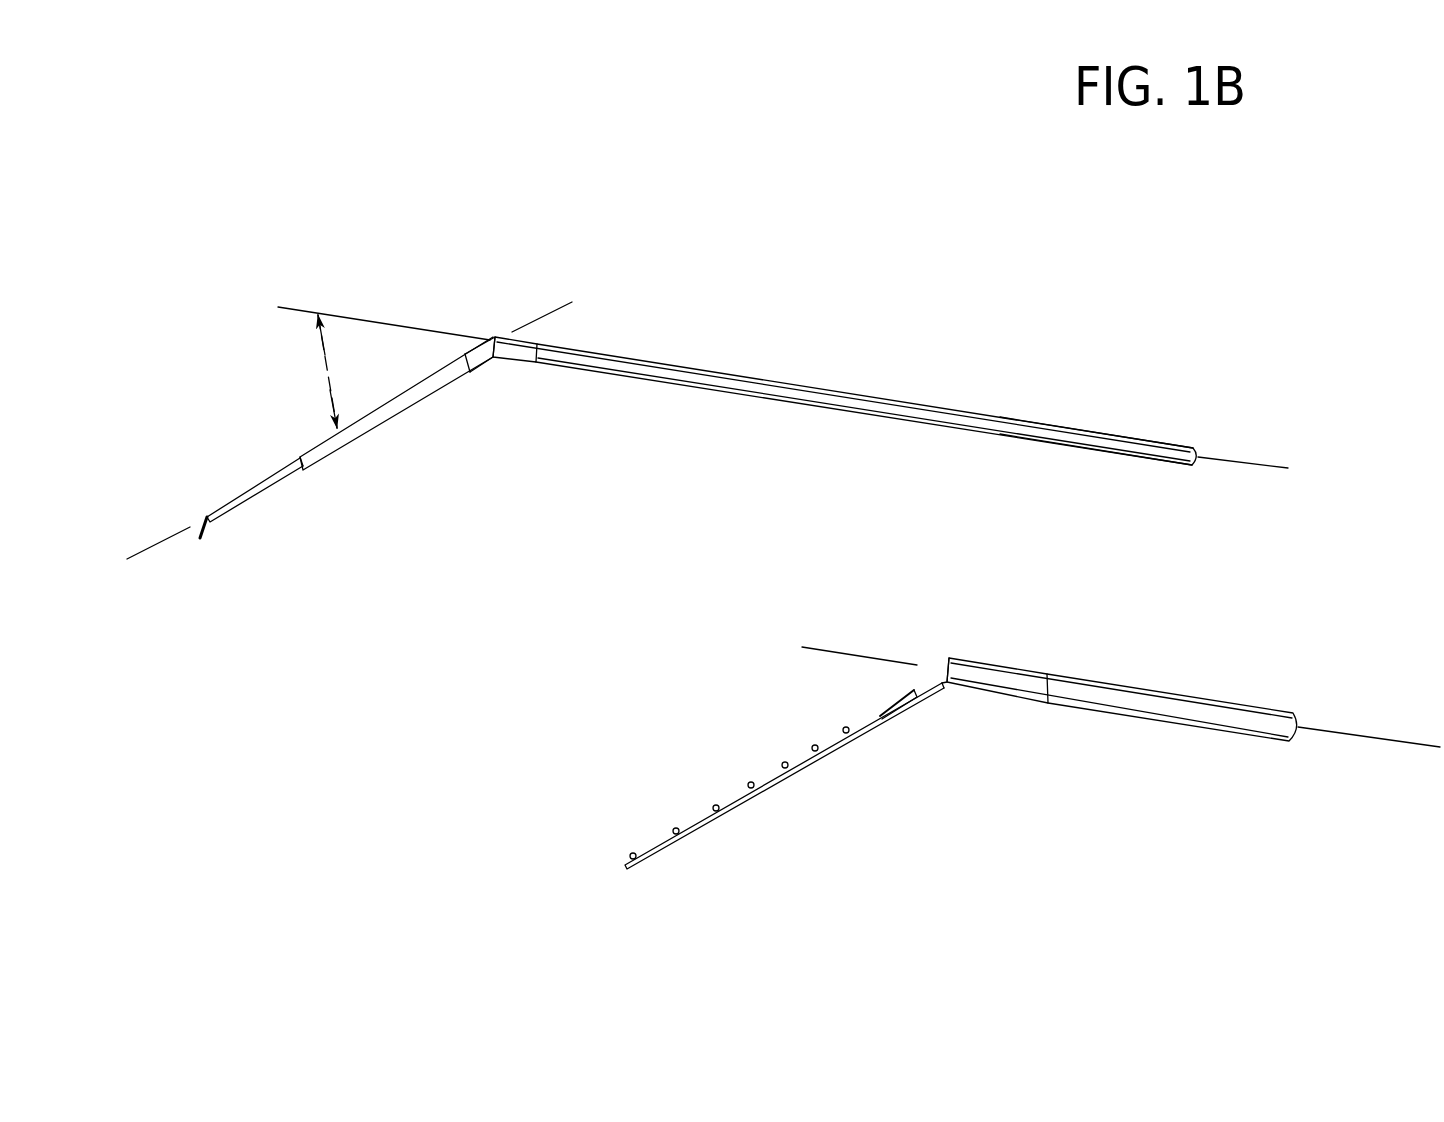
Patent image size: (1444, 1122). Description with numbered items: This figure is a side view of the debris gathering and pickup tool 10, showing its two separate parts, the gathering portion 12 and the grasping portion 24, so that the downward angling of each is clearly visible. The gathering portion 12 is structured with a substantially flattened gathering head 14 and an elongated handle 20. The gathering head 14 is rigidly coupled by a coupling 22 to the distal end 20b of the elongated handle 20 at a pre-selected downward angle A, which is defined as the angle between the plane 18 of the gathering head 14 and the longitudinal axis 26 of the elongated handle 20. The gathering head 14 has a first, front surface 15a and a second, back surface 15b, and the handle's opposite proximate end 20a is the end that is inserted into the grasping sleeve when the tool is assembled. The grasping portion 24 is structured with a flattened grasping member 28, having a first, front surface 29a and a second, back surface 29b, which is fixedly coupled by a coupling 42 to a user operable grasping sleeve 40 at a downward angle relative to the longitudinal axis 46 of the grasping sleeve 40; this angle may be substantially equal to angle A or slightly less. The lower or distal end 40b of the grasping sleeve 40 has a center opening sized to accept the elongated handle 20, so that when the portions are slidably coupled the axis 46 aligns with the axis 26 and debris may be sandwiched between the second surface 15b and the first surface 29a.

The gathering and pickup tool 10 is at (360, 680).
The gathering portion 12 is at (762, 278).
The gathering head 14 is at (392, 445).
The first surface of gathering head 15a is at (290, 458).
The second surface of gathering head 15b is at (445, 392).
The plane of gathering head 18 is at (572, 302).
The elongated handle 20 is at (872, 404).
The proximate end of elongated handle 20a is at (1110, 440).
The distal end of elongated handle 20b is at (557, 347).
The gathering portion coupling 22 is at (484, 348).
The grasping portion 24 is at (1022, 752).
The longitudinal axis of elongated handle 26 is at (347, 317).
The grasping member 28 is at (762, 752).
The first surface of grasping member 29a is at (725, 800).
The second surface of grasping member 29b is at (770, 790).
The grasping sleeve 40 is at (1125, 690).
The distal end of grasping sleeve 40b is at (966, 668).
The grasping portion coupling 42 is at (940, 682).
The longitudinal axis of grasping sleeve 46 is at (818, 645).